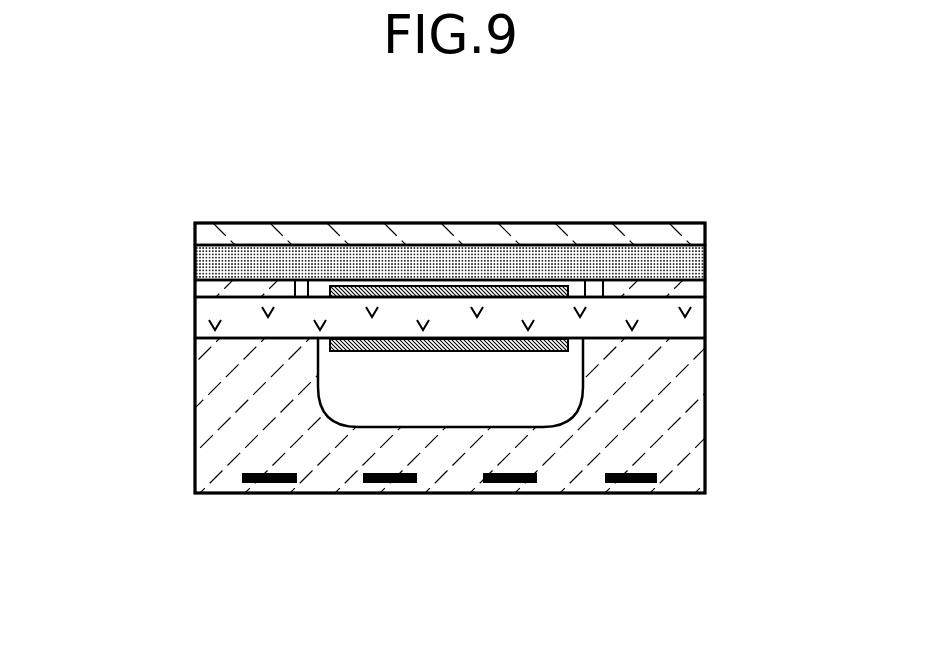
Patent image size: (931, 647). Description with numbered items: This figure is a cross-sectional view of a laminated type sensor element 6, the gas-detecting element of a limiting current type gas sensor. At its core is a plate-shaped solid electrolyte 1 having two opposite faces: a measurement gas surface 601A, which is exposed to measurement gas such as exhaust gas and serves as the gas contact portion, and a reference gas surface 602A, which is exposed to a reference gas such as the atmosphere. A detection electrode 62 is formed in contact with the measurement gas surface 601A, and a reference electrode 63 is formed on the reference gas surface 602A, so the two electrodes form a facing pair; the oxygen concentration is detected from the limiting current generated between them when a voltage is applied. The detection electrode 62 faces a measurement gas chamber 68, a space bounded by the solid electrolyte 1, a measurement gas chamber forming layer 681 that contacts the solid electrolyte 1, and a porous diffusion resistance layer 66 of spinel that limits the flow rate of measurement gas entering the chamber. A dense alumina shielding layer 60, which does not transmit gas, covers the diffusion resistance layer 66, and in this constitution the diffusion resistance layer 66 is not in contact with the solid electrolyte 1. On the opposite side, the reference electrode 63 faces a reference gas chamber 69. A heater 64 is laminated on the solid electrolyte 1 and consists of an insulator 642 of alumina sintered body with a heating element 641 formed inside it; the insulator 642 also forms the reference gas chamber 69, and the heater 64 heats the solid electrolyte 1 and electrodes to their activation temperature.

The sensor element 6 is at (685, 198).
The shielding layer 60 is at (473, 235).
The diffusion resistance layer 66 is at (250, 258).
The measurement gas chamber forming layer 681 is at (233, 290).
The measurement gas surface 601A is at (315, 280).
The measurement gas chamber 68 is at (588, 288).
The detection electrode 62 is at (522, 290).
The solid electrolyte 1 is at (683, 327).
The heater 64 is at (475, 431).
The insulator 642 is at (303, 423).
The heating element 641 is at (383, 484).
The reference gas chamber 69 is at (357, 402).
The reference gas surface 602A is at (577, 340).
The reference electrode 63 is at (443, 351).